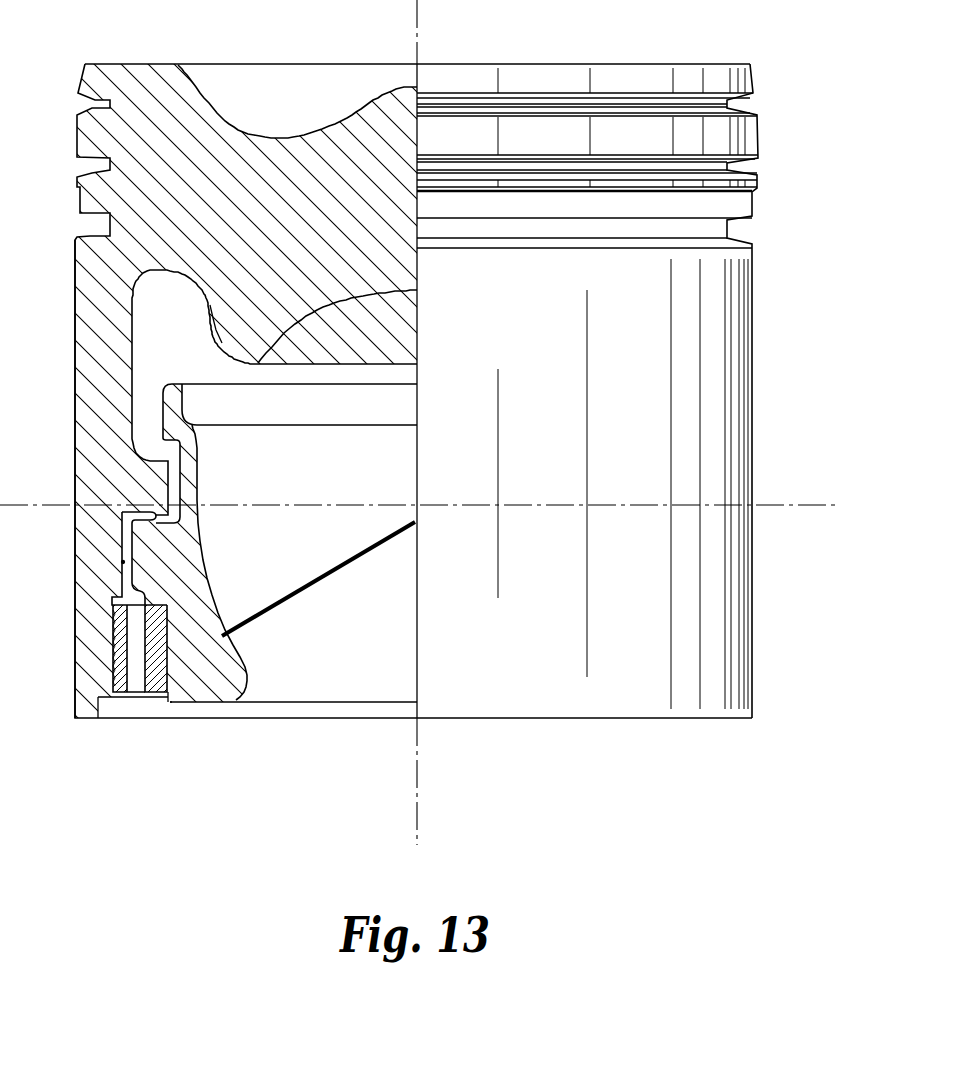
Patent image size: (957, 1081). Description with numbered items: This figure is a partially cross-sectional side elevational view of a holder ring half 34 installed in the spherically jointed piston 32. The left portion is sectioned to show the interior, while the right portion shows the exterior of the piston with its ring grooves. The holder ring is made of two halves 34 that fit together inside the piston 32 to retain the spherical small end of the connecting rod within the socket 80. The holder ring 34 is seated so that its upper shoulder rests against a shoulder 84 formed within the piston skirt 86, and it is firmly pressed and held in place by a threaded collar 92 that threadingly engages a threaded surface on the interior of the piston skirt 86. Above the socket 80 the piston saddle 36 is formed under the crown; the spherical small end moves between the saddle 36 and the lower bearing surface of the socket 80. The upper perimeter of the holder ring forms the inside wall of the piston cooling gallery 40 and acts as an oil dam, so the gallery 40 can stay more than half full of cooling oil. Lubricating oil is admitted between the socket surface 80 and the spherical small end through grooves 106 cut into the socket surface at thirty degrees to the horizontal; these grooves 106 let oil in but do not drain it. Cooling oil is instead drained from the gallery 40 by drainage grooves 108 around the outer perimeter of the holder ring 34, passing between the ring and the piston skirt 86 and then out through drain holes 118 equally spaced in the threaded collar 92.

The spherically jointed piston 32 is at (740, 63).
The holder ring half 34 is at (160, 400).
The piston saddle 36 is at (377, 346).
The piston cooling gallery 40 is at (163, 340).
The socket 80 is at (375, 520).
The shoulder 84 is at (123, 513).
The piston skirt 86 is at (73, 633).
The threaded collar 92 is at (153, 688).
The grooves 106 is at (335, 570).
The drainage grooves 108 is at (123, 563).
The drain holes 118 is at (127, 686).